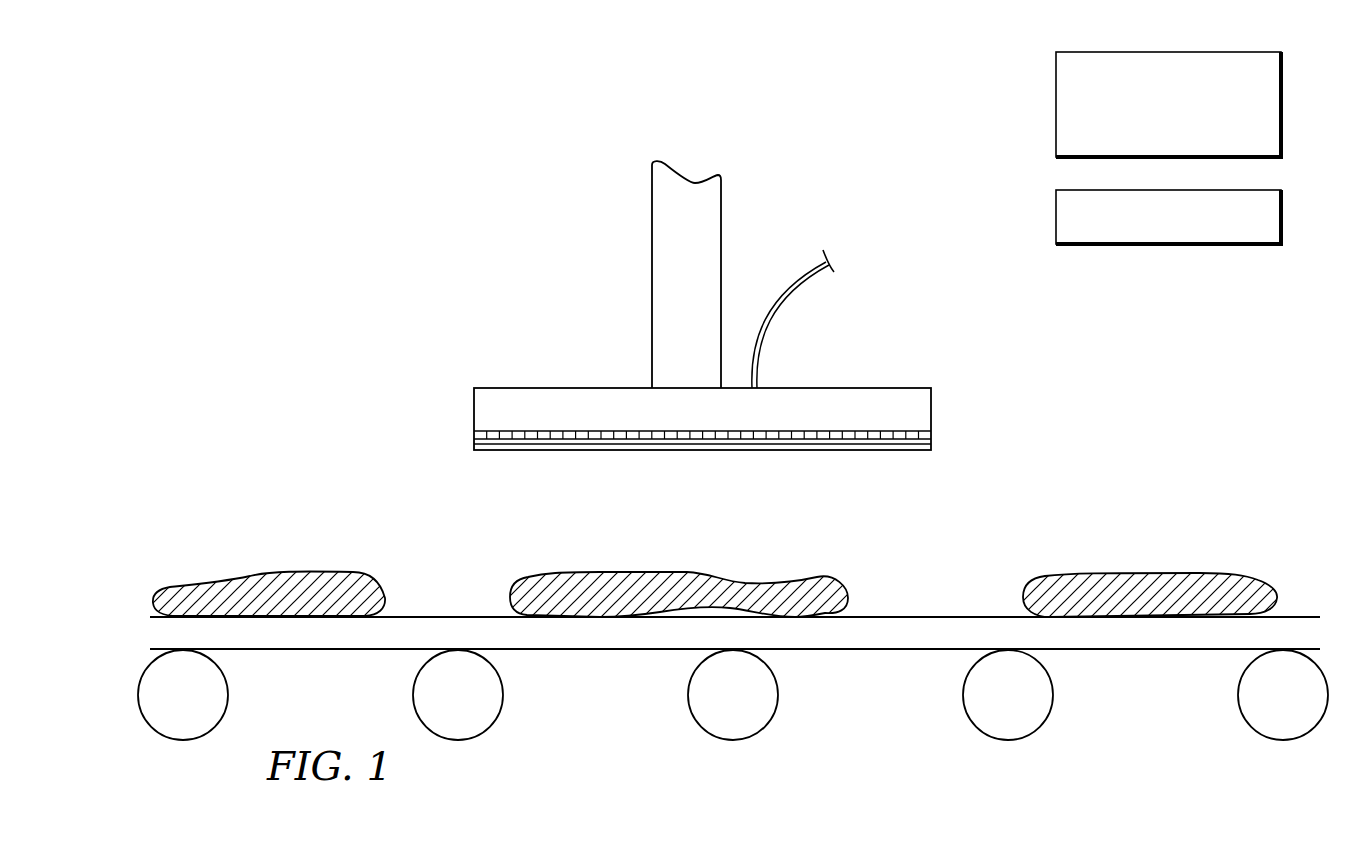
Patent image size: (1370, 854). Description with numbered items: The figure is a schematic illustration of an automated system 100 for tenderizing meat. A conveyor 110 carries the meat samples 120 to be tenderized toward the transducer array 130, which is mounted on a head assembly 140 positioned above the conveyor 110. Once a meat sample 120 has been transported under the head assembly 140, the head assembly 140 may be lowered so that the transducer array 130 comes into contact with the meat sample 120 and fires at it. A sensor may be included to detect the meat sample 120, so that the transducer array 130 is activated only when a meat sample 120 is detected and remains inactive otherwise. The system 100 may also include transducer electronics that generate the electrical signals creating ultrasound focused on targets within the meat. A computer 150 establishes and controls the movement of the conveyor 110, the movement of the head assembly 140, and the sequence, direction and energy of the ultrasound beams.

The automated system 100 is at (396, 143).
The conveyor 110 is at (905, 627).
The meat samples 120 is at (1240, 585).
The transducer array 130 is at (915, 435).
The head assembly 140 is at (483, 413).
The computer 150 is at (1268, 98).